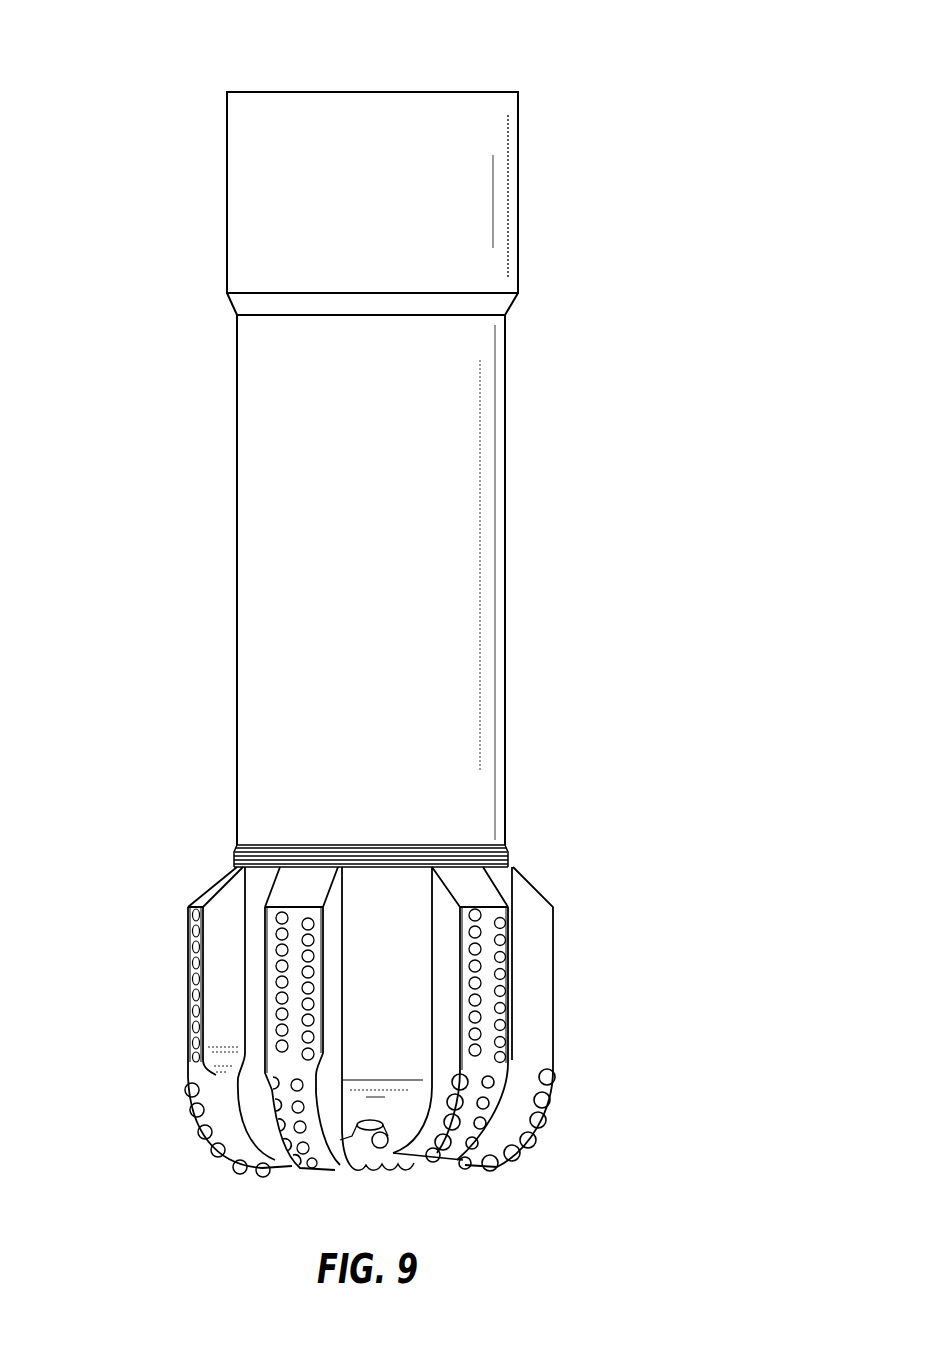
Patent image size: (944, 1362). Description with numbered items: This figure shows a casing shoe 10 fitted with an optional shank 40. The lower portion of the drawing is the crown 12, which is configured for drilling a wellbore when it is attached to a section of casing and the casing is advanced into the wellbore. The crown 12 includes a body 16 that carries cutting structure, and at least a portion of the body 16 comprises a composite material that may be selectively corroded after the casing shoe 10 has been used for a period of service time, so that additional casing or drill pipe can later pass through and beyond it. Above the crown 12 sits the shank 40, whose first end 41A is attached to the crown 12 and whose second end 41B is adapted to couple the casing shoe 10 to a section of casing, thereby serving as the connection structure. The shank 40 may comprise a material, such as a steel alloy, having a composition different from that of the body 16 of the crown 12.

The casing shoe 10 is at (158, 86).
The crown 12 is at (156, 1128).
The body 16 is at (393, 997).
The shank 40 is at (471, 176).
The first end 41A is at (527, 838).
The second end 41B is at (527, 83).